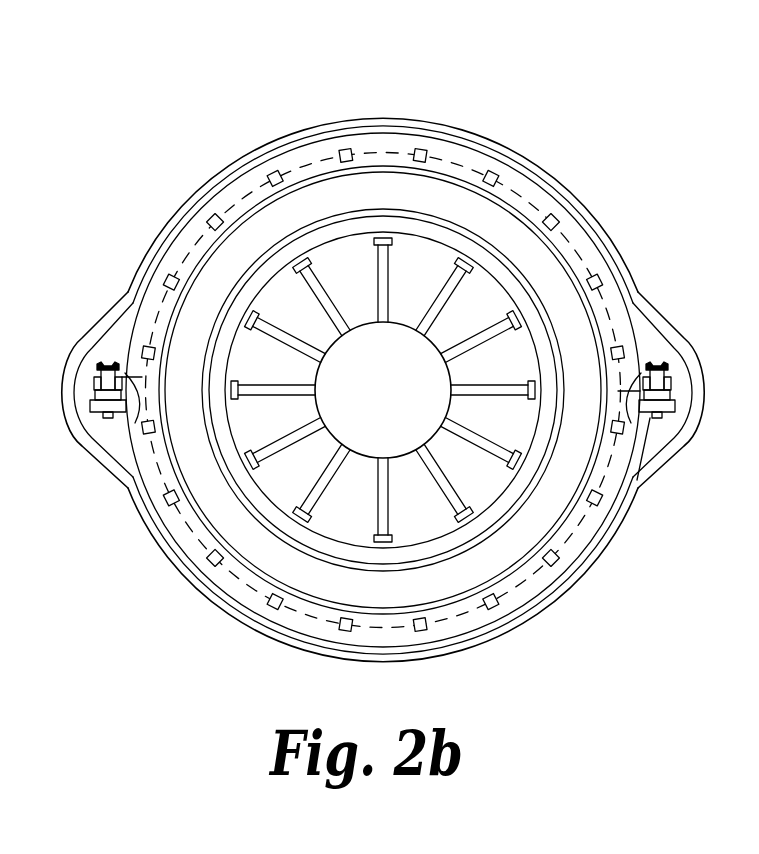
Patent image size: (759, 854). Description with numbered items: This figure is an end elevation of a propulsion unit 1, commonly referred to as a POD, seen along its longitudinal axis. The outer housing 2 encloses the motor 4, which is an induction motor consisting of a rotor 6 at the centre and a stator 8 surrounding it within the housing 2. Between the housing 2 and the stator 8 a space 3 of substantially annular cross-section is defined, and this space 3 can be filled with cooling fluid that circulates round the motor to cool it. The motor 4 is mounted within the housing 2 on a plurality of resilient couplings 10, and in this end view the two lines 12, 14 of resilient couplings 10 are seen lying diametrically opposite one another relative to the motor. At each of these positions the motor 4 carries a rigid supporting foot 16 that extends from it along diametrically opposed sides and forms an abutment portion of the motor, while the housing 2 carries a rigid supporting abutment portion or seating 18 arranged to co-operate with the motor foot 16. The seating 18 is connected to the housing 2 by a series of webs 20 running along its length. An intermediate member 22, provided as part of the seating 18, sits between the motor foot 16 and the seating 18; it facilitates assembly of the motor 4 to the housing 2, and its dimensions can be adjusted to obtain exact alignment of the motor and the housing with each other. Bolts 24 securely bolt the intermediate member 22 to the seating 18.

The propulsion unit 1 is at (463, 113).
The housing 2 is at (525, 162).
The space 3 is at (210, 590).
The motor 4 is at (497, 233).
The rotor 6 is at (500, 282).
The stator 8 is at (568, 312).
The resilient couplings 10 is at (93, 357).
The line of resilient couplings 12 is at (115, 350).
The line of resilient couplings 14 is at (657, 425).
The supporting foot 16 is at (118, 460).
The seating 18 is at (88, 400).
The webs 20 is at (120, 440).
The intermediate member 22 is at (95, 399).
The bolts 24 is at (103, 427).